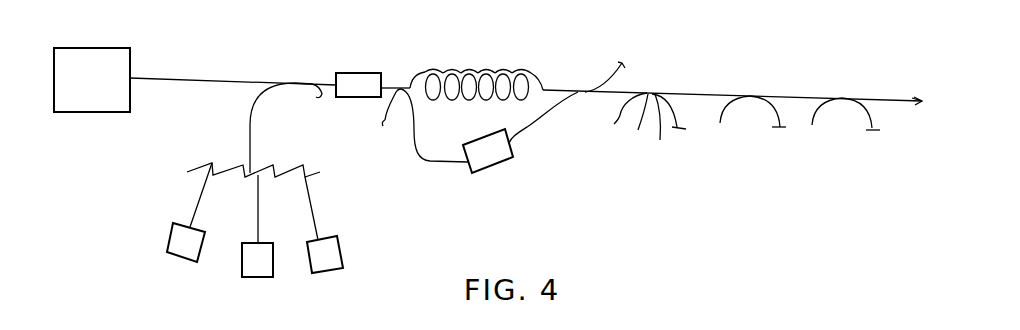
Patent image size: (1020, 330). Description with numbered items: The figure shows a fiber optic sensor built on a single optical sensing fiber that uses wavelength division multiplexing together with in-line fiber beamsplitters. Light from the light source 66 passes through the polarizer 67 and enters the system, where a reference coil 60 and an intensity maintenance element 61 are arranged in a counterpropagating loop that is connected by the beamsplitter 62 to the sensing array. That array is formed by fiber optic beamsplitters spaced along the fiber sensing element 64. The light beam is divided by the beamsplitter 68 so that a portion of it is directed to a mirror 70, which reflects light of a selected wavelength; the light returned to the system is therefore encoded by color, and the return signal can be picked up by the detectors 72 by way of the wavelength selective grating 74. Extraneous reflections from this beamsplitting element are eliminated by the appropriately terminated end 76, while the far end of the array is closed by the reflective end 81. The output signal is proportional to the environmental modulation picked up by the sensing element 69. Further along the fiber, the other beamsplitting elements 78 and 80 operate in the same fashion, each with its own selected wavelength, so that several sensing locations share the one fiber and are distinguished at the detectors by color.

The reference coil 60 is at (488, 70).
The intensity maintenance element 61 is at (500, 165).
The beamsplitter 62 is at (580, 90).
The fiber sensing element 64 is at (700, 93).
The light source 66 is at (107, 55).
The polarizer 67 is at (358, 77).
The beamsplitter 68 is at (632, 124).
The sensing element 69 is at (658, 130).
The mirror 70 is at (681, 124).
The detectors 72 is at (245, 312).
The wavelength selective grating 74 is at (300, 165).
The terminating end 76 is at (617, 117).
The beamsplitting element 78 is at (750, 98).
The beamsplitting element 80 is at (842, 100).
The reflective end 81 is at (920, 99).